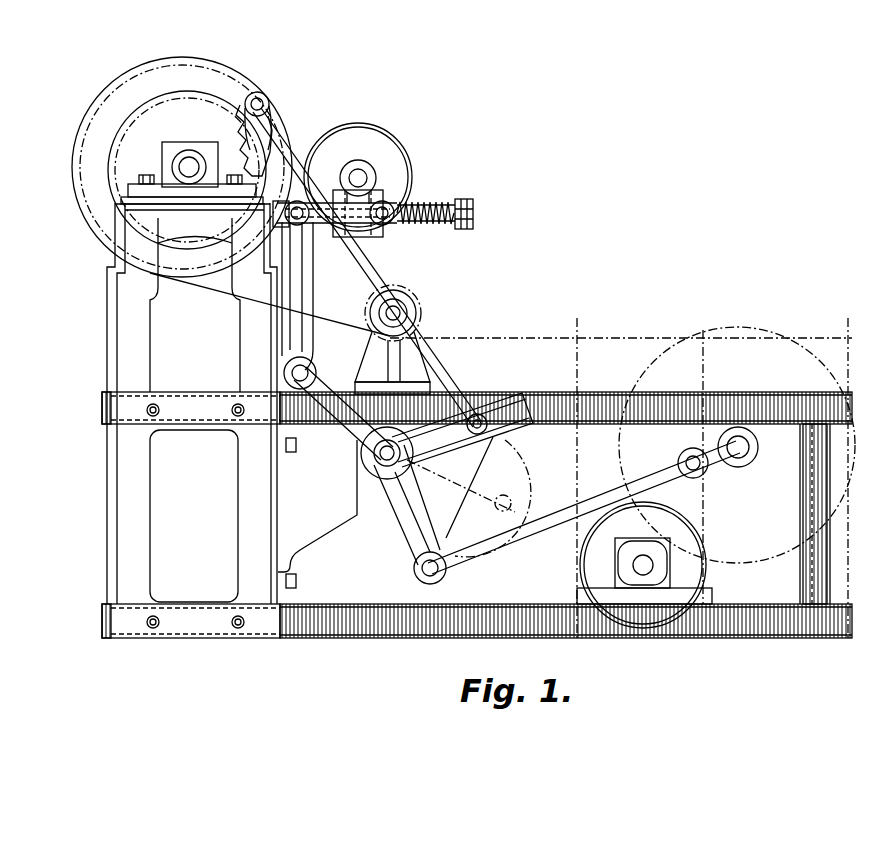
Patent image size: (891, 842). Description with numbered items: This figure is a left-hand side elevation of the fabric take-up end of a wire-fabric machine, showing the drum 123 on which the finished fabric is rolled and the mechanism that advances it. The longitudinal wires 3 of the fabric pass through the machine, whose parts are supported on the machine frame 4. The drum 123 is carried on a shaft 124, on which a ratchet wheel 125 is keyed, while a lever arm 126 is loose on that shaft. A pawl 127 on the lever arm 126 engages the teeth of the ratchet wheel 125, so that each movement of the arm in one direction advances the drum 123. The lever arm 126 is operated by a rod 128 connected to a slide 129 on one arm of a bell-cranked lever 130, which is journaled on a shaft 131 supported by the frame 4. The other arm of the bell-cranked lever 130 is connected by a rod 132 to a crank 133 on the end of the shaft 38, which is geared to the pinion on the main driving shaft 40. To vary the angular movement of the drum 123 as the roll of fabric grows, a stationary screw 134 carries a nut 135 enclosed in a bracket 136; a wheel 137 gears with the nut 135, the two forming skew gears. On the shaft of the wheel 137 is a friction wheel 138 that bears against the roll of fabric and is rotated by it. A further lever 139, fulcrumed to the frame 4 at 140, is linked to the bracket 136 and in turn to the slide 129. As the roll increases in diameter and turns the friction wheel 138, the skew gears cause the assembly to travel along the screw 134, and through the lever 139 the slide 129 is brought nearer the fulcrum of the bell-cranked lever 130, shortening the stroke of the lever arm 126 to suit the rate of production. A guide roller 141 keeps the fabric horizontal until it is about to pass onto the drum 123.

The longitudinal wires 3 is at (214, 292).
The machine frame 4 is at (214, 263).
The shaft 38 is at (752, 451).
The main driving shaft 40 is at (638, 566).
The drum 123 is at (120, 122).
The shaft 124 is at (190, 160).
The ratchet wheel 125 is at (119, 175).
The lever arm 126 is at (236, 100).
The pawl 127 is at (273, 118).
The rod 128 is at (373, 268).
The slide 129 is at (490, 428).
The bell-cranked lever 130 is at (506, 390).
The shaft 131 is at (394, 442).
The rod 132 is at (576, 522).
The crank 133 is at (728, 468).
The stationary screw 134 is at (437, 200).
The nut 135 is at (373, 194).
The bracket 136 is at (330, 196).
The wheel 137 is at (366, 162).
The friction wheel 138 is at (396, 132).
The lever 139 is at (313, 304).
The fulcrum 140 is at (308, 368).
The guide roller 141 is at (405, 293).